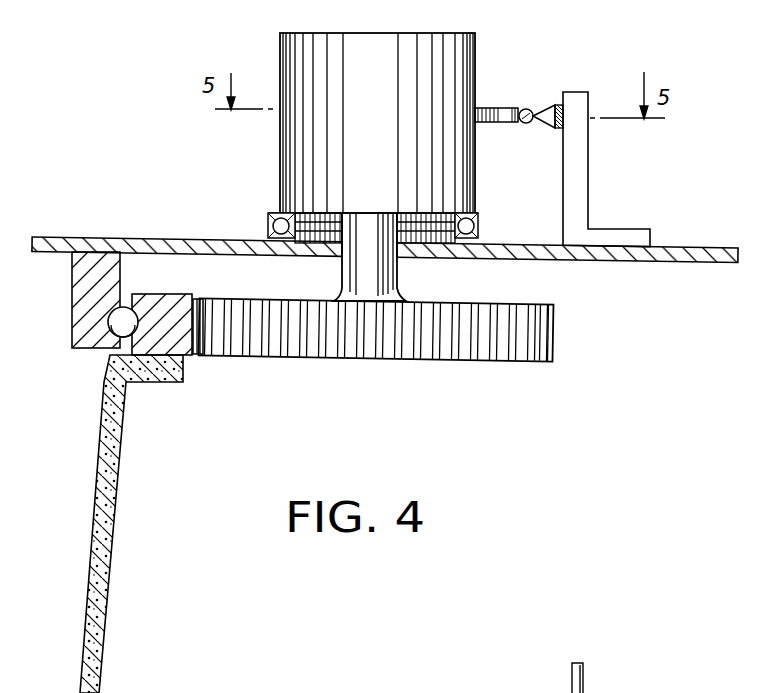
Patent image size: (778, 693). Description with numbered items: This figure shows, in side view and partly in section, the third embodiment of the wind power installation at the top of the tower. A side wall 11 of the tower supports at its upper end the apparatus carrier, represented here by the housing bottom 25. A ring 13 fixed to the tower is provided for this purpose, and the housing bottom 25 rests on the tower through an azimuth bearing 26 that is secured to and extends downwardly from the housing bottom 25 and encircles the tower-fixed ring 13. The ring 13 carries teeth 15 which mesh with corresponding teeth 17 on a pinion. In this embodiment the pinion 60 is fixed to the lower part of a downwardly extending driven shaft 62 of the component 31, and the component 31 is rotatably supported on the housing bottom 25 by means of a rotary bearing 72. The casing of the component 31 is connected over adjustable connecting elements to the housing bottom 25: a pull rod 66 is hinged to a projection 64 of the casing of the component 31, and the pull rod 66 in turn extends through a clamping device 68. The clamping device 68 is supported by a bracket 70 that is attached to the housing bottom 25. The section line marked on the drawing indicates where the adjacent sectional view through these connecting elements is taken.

The side wall 11 is at (122, 531).
The ring 13 is at (171, 299).
The teeth 15 is at (204, 289).
The teeth 17 is at (545, 341).
The housing bottom 25 is at (721, 233).
The azimuth bearing 26 is at (77, 336).
The component 31 is at (400, 26).
The pinion 60 is at (410, 355).
The driven shaft 62 is at (390, 282).
The projection 64 is at (500, 108).
The pull rod 66 is at (525, 124).
The clamping device 68 is at (530, 110).
The bracket 70 is at (583, 174).
The rotary bearing 72 is at (272, 221).